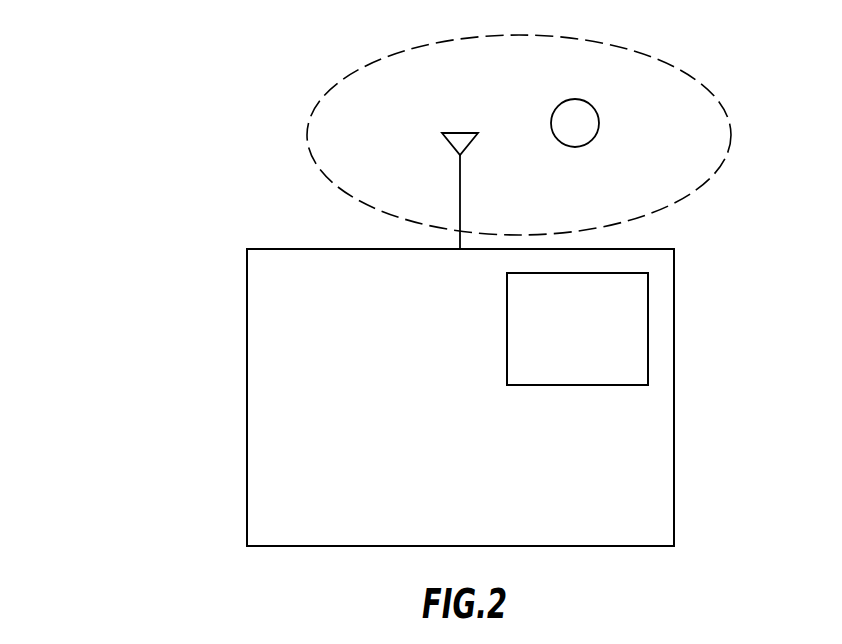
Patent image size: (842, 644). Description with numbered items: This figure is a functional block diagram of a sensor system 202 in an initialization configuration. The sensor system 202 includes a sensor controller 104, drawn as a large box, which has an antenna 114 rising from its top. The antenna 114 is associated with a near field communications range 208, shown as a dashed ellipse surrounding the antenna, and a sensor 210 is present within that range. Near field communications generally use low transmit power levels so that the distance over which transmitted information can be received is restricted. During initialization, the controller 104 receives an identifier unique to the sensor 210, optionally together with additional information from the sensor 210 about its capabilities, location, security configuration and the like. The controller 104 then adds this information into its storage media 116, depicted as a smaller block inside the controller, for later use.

The sensor system 202 is at (155, 92).
The near field communications range 208 is at (673, 65).
The sensor 210 is at (598, 113).
The sensor controller 104 is at (247, 315).
The antenna 114 is at (460, 198).
The storage media 116 is at (507, 345).